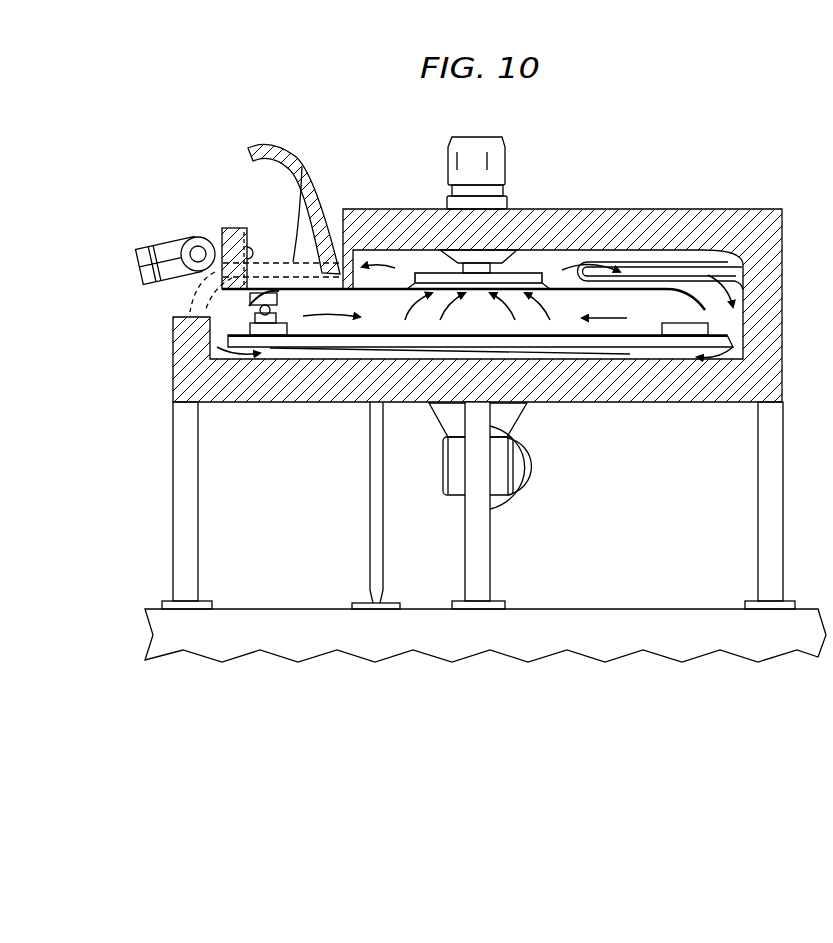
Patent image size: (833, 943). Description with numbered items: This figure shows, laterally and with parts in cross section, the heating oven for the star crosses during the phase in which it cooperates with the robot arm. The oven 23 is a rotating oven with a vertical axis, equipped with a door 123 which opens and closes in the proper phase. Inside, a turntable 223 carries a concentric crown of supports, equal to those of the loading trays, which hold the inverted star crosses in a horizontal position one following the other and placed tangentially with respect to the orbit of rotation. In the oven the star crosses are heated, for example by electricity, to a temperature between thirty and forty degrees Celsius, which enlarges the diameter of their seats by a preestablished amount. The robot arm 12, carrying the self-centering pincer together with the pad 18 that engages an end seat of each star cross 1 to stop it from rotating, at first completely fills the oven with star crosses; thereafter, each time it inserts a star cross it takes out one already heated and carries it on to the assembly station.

The star cross 1 is at (267, 314).
The robot arm 12 is at (165, 227).
The pad 18 is at (253, 304).
The rotating oven 23 is at (709, 207).
The door 123 is at (287, 163).
The turntable 223 is at (724, 338).